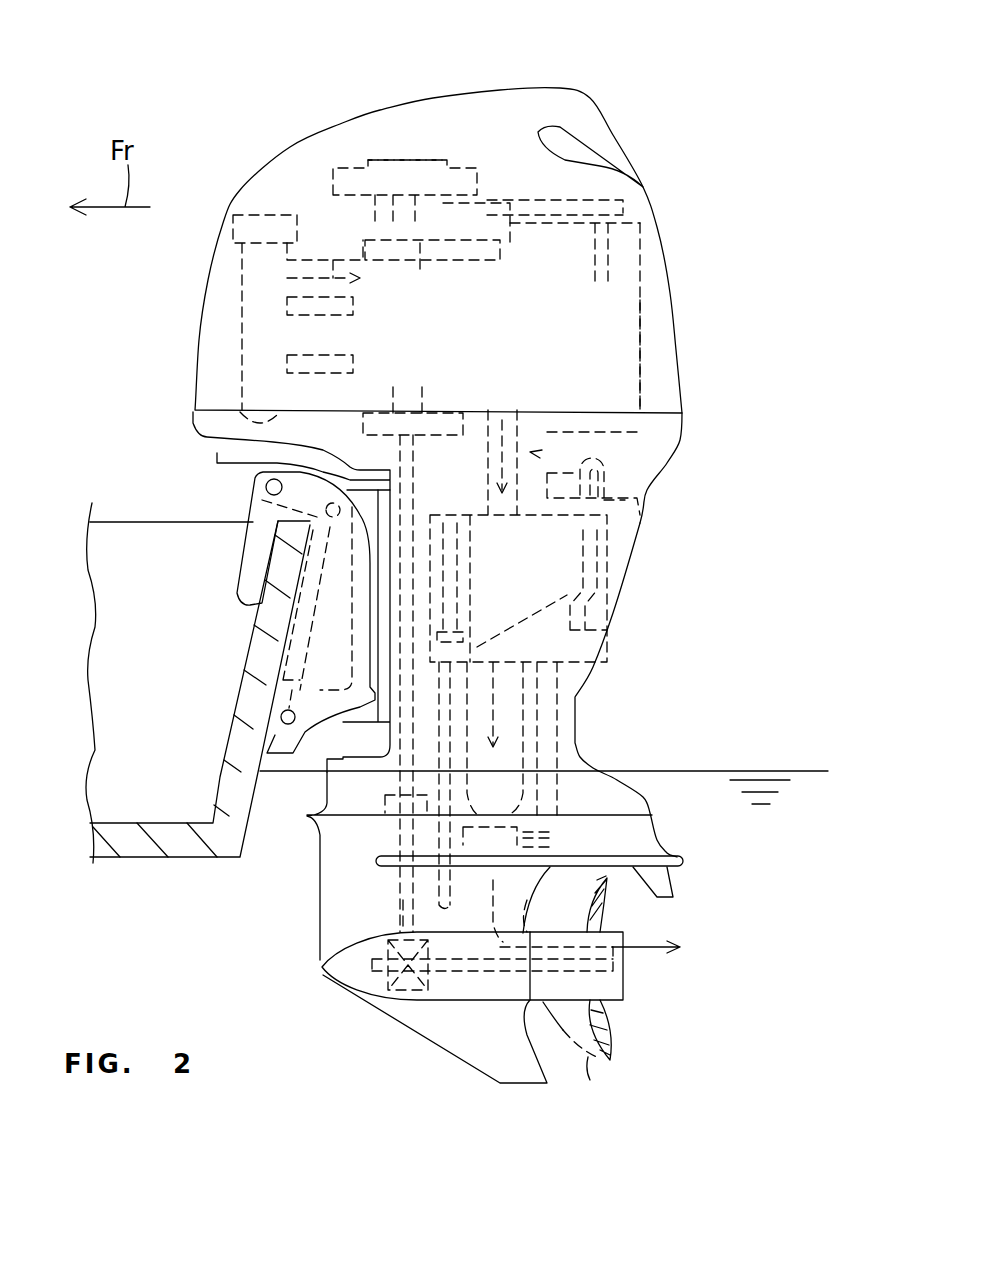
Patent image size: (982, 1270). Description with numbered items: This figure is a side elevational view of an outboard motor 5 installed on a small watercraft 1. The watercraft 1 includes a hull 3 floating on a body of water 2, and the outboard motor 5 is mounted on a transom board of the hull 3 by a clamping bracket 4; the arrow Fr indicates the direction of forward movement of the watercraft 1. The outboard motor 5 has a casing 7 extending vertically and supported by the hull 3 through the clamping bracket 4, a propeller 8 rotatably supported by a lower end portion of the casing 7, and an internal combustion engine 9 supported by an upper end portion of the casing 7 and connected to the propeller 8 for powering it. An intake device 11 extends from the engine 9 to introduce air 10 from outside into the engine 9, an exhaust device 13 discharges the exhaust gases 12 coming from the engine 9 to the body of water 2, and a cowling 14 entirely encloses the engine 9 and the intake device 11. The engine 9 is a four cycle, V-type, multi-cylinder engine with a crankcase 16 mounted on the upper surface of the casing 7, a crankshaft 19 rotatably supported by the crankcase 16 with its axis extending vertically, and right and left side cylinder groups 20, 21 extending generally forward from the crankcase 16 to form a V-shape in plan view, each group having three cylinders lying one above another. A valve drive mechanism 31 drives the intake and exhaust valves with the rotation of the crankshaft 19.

The small watercraft 1 is at (688, 113).
The body of water 2 is at (790, 770).
The hull 3 is at (135, 850).
The clamping bracket 4 is at (254, 566).
The outboard motor 5 is at (707, 190).
The casing 7 is at (613, 613).
The propeller 8 is at (600, 1060).
The internal combustion engine 9 is at (647, 277).
The air 10 is at (333, 250).
The intake device 11 is at (240, 298).
The exhaust gases 12 is at (498, 698).
The exhaust device 13 is at (533, 453).
The cowling 14 is at (503, 92).
The crankcase 16 is at (380, 165).
The crankshaft 19 is at (427, 273).
The right side cylinder group 20 is at (645, 323).
The left side cylinder group 21 is at (698, 355).
The valve drive mechanism 31 is at (567, 200).